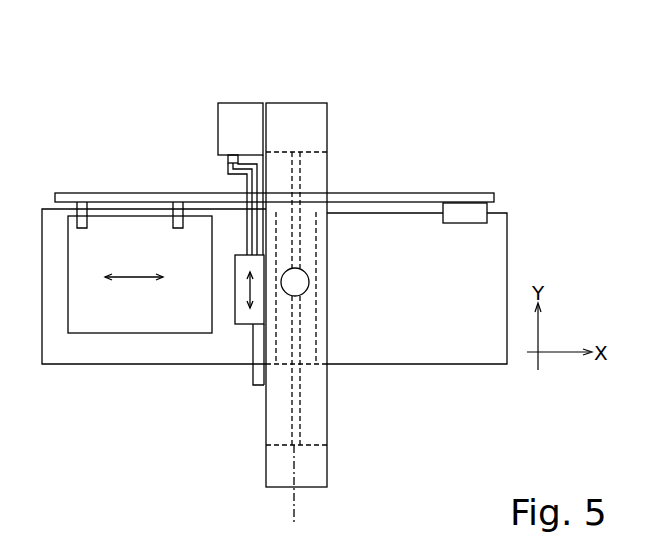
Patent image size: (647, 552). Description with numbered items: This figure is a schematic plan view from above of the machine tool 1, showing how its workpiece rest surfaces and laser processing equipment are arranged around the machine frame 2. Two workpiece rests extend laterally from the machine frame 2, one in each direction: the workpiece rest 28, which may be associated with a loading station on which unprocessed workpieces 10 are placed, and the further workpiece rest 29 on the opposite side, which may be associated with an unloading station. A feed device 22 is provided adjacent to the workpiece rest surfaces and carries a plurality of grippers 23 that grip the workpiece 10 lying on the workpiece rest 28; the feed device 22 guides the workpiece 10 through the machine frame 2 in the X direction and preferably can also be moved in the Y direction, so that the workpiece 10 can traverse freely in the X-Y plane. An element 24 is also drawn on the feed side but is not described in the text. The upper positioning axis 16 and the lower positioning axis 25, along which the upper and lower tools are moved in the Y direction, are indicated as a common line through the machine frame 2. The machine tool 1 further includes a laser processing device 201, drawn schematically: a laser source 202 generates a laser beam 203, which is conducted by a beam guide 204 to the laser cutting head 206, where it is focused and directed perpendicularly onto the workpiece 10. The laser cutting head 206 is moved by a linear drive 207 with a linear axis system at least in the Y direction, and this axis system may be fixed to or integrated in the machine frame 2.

The machine tool 1 is at (353, 104).
The machine frame 2 is at (300, 98).
The workpiece 10 is at (97, 315).
The positioning axis 16 is at (351, 486).
The feed device 22 is at (420, 188).
The grippers 23 is at (177, 200).
The carriage 24 is at (473, 208).
The lower positioning axis 25 is at (293, 516).
The workpiece rest 28 is at (147, 355).
The further workpiece rest 29 is at (402, 353).
The laser processing device 201 is at (211, 112).
The laser source 202 is at (240, 123).
The laser beam 203 is at (227, 162).
The beam guide 204 is at (230, 174).
The laser cutting head 206 is at (237, 312).
The linear drive 207 is at (262, 379).